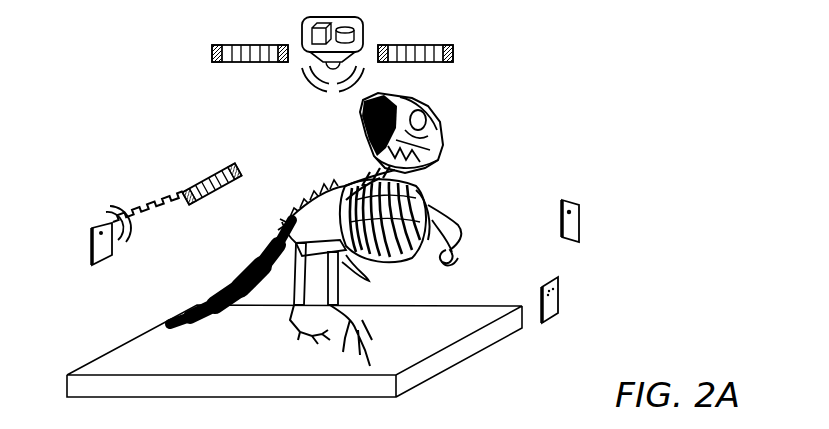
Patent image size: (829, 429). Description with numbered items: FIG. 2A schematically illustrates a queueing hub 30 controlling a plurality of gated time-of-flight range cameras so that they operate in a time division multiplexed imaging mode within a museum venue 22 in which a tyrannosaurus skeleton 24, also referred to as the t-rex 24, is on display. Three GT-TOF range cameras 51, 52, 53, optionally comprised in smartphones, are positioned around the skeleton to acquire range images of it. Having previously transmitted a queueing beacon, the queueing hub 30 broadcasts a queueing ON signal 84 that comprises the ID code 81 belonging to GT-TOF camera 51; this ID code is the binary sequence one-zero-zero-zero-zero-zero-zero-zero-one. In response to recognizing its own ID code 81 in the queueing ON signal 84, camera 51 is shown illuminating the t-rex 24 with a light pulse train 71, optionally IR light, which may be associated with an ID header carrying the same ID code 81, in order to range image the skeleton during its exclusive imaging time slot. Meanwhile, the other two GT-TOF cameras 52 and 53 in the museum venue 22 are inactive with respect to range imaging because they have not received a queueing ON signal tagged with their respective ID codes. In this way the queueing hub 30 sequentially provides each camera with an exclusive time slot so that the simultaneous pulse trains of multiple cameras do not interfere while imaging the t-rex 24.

The museum venue 22 is at (355, 229).
The tyrannosaurus skeleton 24 is at (365, 131).
The queueing hub 30 is at (383, 32).
The GT-TOF range camera 51 is at (92, 238).
The GT-TOF range camera 52 is at (560, 290).
The GT-TOF range camera 53 is at (581, 213).
The light pulse train 71 is at (133, 195).
The ID code 81 is at (202, 170).
The queueing ON signal 84 is at (212, 70).